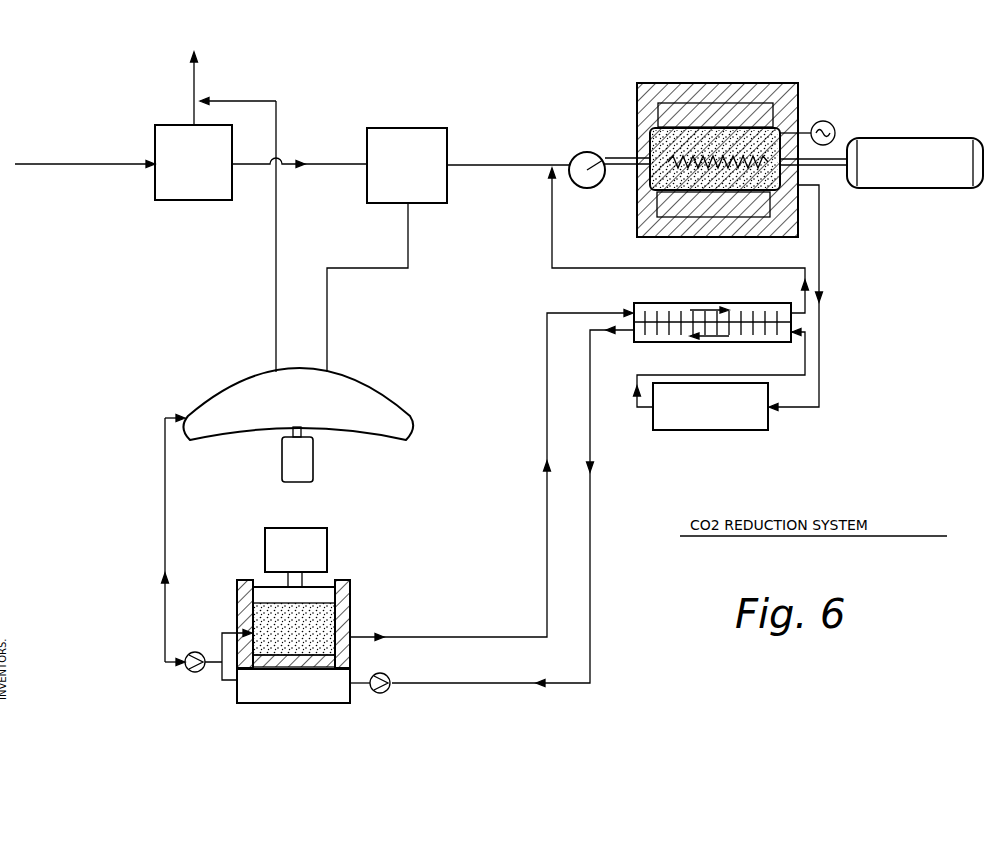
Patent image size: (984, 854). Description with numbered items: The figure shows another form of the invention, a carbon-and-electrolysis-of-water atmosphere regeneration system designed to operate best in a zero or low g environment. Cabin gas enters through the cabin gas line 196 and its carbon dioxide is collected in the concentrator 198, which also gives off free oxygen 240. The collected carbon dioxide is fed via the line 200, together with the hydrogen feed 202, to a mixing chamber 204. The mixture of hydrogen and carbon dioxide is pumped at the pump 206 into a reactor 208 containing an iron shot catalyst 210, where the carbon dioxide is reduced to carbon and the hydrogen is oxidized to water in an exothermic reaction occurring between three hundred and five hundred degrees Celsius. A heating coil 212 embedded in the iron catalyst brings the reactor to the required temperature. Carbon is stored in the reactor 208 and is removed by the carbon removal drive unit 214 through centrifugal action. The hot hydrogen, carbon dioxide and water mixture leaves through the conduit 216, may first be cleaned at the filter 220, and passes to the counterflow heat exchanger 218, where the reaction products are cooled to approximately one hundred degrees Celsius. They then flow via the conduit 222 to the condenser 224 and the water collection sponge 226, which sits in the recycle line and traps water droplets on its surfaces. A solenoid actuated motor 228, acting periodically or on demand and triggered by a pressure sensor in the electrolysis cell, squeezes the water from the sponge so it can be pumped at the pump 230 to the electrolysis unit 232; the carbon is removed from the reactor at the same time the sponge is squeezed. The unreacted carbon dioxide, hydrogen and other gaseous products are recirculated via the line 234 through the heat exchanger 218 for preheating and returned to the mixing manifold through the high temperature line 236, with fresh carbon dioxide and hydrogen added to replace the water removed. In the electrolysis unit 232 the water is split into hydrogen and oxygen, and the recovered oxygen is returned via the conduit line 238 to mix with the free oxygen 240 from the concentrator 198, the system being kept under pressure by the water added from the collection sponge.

The cabin gas line 196 is at (81, 170).
The concentrator 198 is at (181, 201).
The line 200 is at (346, 166).
The hydrogen feed 202 is at (409, 243).
The mixing chamber 204 is at (447, 190).
The pump 206 is at (578, 189).
The reactor 208 is at (745, 83).
The iron shot catalyst 210 is at (652, 141).
The heating coil 212 is at (668, 165).
The carbon removal drive unit 214 is at (830, 166).
The conduit 216 is at (821, 343).
The counterflow heat exchanger 218 is at (786, 336).
The filter 220 is at (731, 430).
The conduit 222 is at (590, 599).
The condenser 224 is at (341, 657).
The water collection sponge 226 is at (350, 602).
The solenoid actuated motor 228 is at (328, 536).
The pump 230 is at (190, 672).
The electrolysis unit 232 is at (307, 402).
The line 234 is at (547, 522).
The high temperature line 236 is at (599, 270).
The conduit line 238 is at (275, 319).
The free oxygen 240 is at (197, 82).